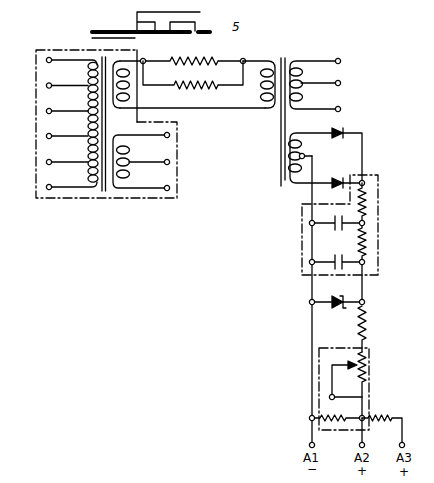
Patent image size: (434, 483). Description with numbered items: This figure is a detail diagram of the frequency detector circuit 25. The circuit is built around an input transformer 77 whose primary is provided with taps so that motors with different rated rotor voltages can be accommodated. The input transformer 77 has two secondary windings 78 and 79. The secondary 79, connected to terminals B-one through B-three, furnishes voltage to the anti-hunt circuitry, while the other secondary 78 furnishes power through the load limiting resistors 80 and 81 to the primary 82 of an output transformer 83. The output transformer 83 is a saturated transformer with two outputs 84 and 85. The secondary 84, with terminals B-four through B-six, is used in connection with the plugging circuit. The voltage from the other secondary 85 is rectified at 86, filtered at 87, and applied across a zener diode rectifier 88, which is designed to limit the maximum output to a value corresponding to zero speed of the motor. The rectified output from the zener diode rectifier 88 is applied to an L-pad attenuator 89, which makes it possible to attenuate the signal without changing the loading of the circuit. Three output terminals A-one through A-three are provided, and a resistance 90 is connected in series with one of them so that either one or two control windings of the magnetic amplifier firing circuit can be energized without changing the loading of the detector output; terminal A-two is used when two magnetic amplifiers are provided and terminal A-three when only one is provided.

The power supply circuit 25 is at (212, 249).
The input transformer 77 is at (52, 200).
The secondary winding 78 is at (130, 89).
The secondary winding 79 is at (118, 194).
The load limiting resistor 80 is at (200, 59).
The load limiting resistor 81 is at (193, 85).
The primary 82 is at (262, 93).
The output transformer 83 is at (311, 43).
The secondary 84 is at (301, 66).
The secondary 85 is at (285, 141).
The rectifier 86 is at (337, 149).
The filter 87 is at (380, 216).
The zener diode rectifier 88 is at (338, 306).
The L-pad attenuator 89 is at (319, 374).
The resistance 90 is at (388, 417).